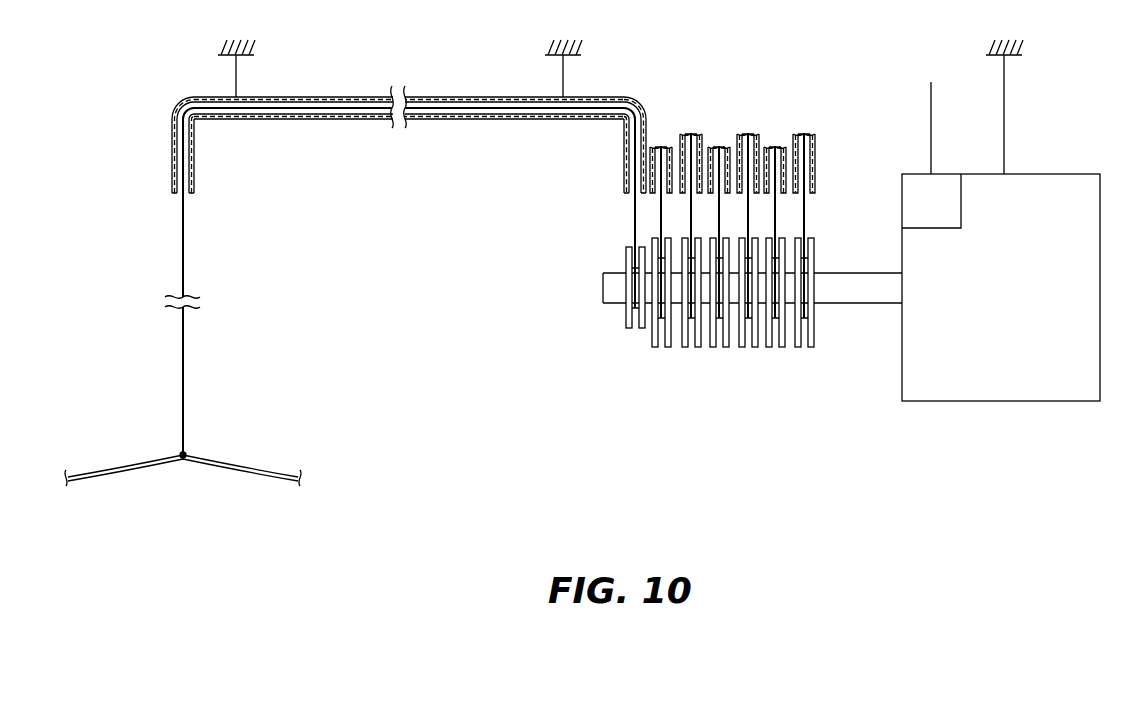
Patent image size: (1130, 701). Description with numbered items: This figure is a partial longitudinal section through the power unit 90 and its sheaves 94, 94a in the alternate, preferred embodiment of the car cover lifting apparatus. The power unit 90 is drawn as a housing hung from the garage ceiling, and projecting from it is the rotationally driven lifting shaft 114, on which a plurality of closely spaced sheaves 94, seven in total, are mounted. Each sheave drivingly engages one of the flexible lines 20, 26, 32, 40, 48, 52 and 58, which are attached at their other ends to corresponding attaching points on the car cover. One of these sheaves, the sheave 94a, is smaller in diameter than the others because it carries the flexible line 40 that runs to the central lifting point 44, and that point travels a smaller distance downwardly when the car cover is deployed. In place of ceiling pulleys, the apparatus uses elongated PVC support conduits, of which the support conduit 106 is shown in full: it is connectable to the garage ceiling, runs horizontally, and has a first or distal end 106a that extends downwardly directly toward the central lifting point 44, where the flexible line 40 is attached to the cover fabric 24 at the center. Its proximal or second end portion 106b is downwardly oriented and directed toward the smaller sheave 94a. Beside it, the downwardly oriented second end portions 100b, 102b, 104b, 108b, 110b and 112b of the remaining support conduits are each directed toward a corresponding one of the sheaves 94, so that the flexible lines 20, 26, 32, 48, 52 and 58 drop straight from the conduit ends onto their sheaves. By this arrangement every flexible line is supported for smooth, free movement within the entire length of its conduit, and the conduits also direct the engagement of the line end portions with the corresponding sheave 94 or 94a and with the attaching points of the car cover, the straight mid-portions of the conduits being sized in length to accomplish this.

The flexible line 20 is at (775, 204).
The fabric panel 24 is at (258, 470).
The flexible line 26 is at (719, 204).
The flexible line 32 is at (661, 204).
The flexible line 40 is at (183, 252).
The central lifting point 44 is at (187, 452).
The flexible line 48 is at (804, 204).
The flexible line 52 is at (748, 204).
The flexible line 58 is at (691, 204).
The power unit 90 is at (1053, 170).
The sheaves 94 is at (729, 266).
The sheave 94a is at (626, 325).
The second end portion of support conduit 100b is at (775, 146).
The second end portion of support conduit 102b is at (719, 146).
The second end portion of support conduit 104b is at (661, 146).
The support conduit 106 is at (409, 145).
The first end of support conduit 106a is at (195, 165).
The second end portion of support conduit 106b is at (626, 161).
The second end portion of support conduit 108b is at (804, 133).
The second end portion of support conduit 110b is at (748, 133).
The second end portion of support conduit 112b is at (691, 133).
The lifting shaft 114 is at (863, 304).